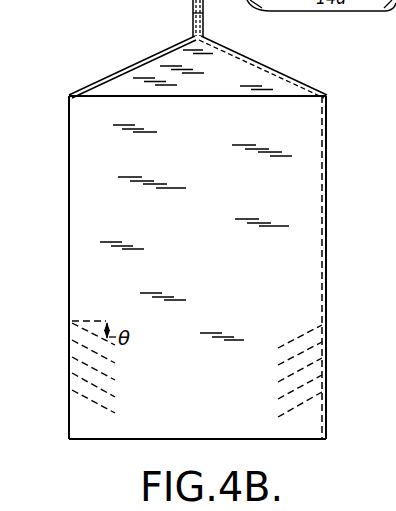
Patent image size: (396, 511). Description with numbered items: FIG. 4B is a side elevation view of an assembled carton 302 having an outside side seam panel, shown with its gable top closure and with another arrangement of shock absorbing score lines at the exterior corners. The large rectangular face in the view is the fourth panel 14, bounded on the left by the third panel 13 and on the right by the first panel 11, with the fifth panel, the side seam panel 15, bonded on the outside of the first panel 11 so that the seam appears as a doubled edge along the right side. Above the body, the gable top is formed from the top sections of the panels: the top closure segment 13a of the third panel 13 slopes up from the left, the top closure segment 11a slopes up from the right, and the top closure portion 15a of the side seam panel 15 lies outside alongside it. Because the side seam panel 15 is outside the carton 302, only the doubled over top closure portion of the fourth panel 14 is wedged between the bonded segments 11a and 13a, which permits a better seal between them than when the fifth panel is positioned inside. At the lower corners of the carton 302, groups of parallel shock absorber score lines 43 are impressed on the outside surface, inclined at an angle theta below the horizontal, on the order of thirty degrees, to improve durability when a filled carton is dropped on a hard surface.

The first panel 11 is at (321, 284).
The top section of first panel 11a is at (233, 56).
The third panel 13 is at (69, 280).
The top section of third panel 13a is at (168, 53).
The fourth panel 14 is at (212, 261).
The side seam panel 15 is at (327, 253).
The top section of side seam panel 15a is at (300, 80).
The shock absorber score lines 43 is at (118, 380).
The carton 302 is at (117, 71).